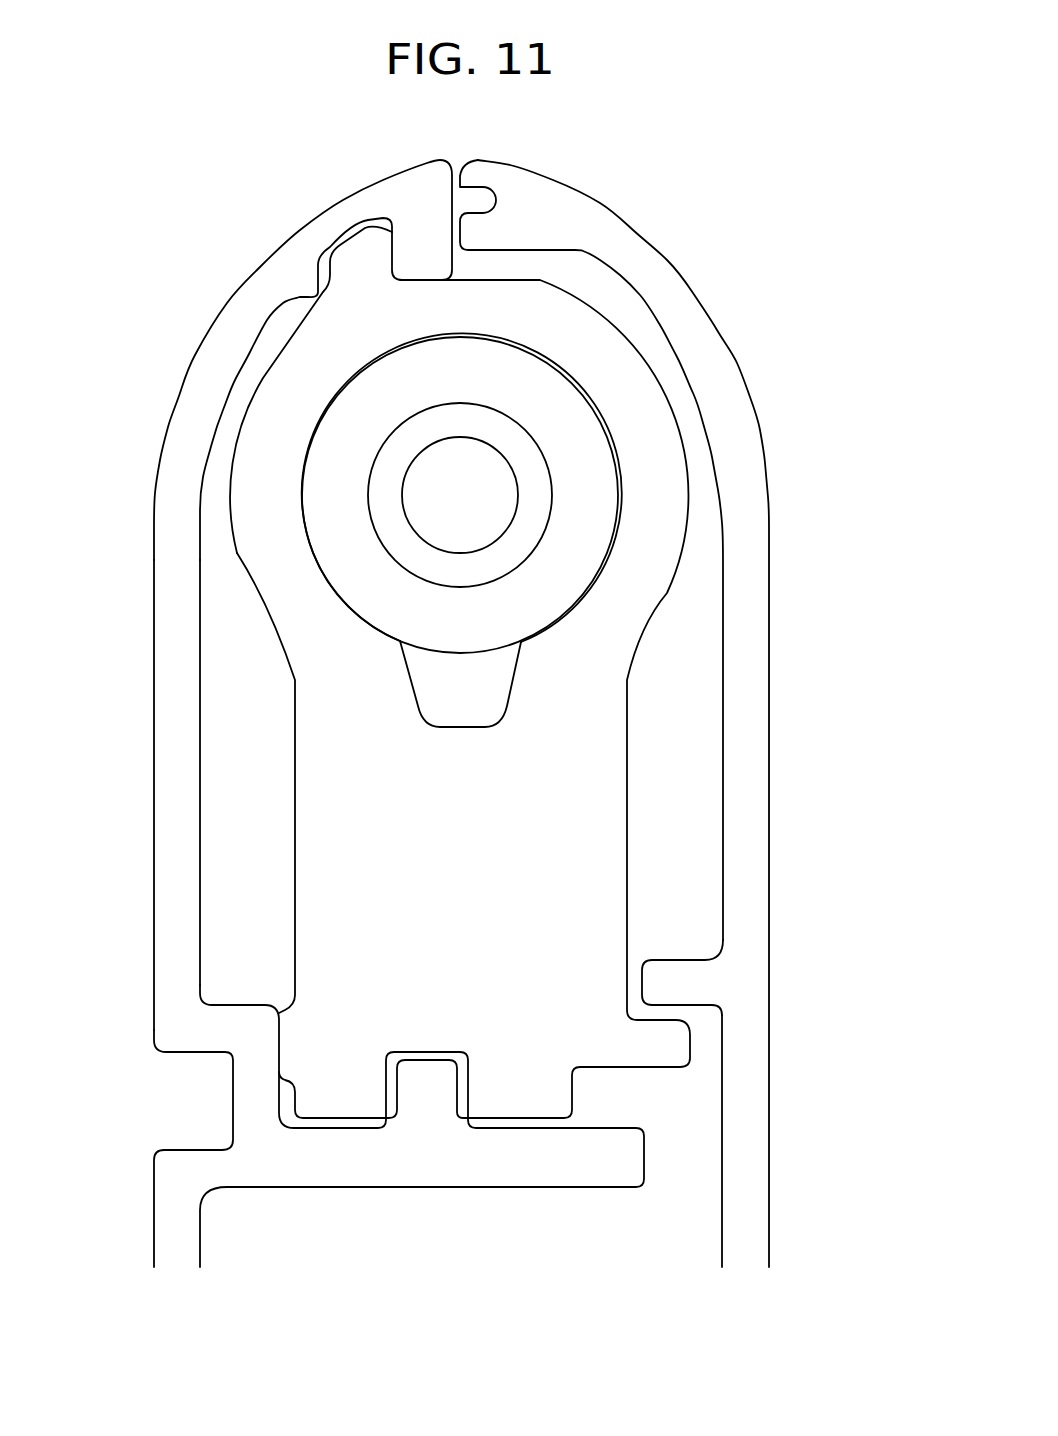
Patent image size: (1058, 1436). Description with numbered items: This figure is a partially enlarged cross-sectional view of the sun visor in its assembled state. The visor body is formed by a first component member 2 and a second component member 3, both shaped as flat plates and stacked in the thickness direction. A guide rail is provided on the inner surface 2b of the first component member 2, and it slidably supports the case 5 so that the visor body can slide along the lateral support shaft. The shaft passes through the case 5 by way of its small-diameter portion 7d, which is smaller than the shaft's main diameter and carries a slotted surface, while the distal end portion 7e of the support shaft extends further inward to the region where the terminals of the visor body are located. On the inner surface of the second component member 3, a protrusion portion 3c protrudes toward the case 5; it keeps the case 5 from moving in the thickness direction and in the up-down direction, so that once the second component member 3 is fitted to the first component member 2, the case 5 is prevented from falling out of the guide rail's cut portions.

The first component member 2 is at (135, 805).
The inner surface 2b is at (200, 688).
The second component member 3 is at (792, 717).
The protrusion portion 3c is at (668, 980).
The case 5 is at (628, 828).
The small-diameter portion 7d is at (563, 423).
The distal end portion 7e is at (487, 490).